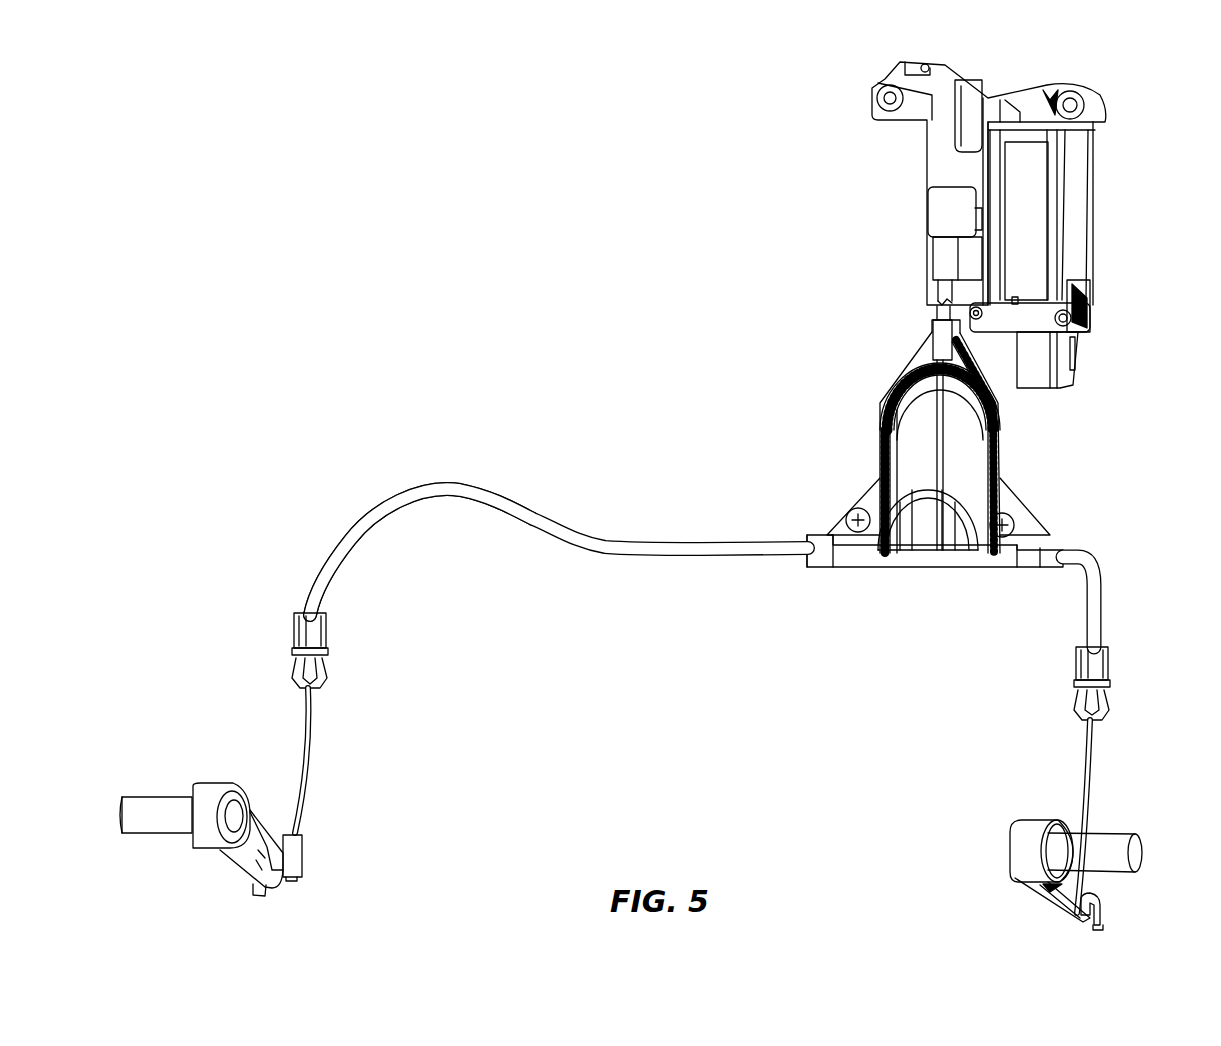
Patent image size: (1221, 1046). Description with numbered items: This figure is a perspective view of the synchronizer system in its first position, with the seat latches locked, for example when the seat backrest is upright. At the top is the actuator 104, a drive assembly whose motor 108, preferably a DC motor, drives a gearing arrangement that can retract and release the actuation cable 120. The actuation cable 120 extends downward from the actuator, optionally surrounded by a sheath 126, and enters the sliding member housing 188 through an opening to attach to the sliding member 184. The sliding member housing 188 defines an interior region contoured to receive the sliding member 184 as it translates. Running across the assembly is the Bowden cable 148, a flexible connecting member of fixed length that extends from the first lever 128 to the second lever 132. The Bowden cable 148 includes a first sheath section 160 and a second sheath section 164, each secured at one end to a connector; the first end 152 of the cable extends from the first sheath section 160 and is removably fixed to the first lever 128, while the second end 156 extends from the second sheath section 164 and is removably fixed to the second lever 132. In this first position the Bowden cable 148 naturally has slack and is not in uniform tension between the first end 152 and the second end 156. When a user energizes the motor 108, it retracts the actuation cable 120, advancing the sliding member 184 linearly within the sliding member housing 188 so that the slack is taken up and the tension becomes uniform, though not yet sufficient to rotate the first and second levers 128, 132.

The actuator 104 is at (1128, 162).
The motor 108 is at (1045, 265).
The sheath 126 is at (938, 286).
The actuation cable 120 is at (932, 422).
The sliding member housing 188 is at (1005, 403).
The sliding member 184 is at (925, 534).
The Bowden cable 148 is at (610, 541).
The first sheath section 160 is at (358, 512).
The second sheath section 164 is at (1095, 568).
The first end 152 is at (297, 833).
The second end 156 is at (1082, 822).
The first lever 128 is at (232, 862).
The second lever 132 is at (1040, 893).